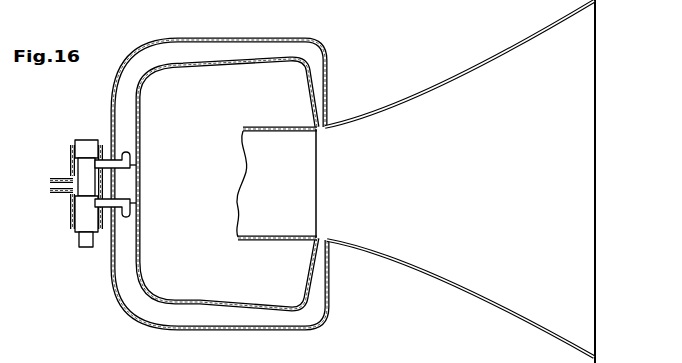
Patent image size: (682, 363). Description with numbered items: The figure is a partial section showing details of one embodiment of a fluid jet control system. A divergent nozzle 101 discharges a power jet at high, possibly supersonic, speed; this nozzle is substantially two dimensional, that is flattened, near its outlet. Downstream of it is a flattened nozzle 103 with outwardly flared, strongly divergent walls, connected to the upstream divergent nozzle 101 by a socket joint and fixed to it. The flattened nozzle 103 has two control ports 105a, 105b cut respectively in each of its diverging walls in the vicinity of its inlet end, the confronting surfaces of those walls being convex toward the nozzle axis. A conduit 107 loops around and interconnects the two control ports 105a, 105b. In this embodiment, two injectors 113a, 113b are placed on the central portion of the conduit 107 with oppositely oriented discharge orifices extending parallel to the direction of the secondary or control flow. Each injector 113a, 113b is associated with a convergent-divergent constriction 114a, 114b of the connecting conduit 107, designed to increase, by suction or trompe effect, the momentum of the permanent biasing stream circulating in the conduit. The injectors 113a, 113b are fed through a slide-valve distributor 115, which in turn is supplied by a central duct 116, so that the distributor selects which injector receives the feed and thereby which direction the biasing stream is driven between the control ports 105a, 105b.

The divergent nozzle 101 is at (277, 147).
The flattened nozzle 103 is at (572, 163).
The control port 105a is at (323, 131).
The control port 105b is at (323, 236).
The conduit 107 is at (230, 38).
The injector 113a is at (140, 171).
The injector 113b is at (142, 203).
The convergent-divergent constriction 114a is at (143, 150).
The convergent-divergent constriction 114b is at (142, 217).
The slide-valve distributor 115 is at (82, 215).
The central duct 116 is at (60, 178).